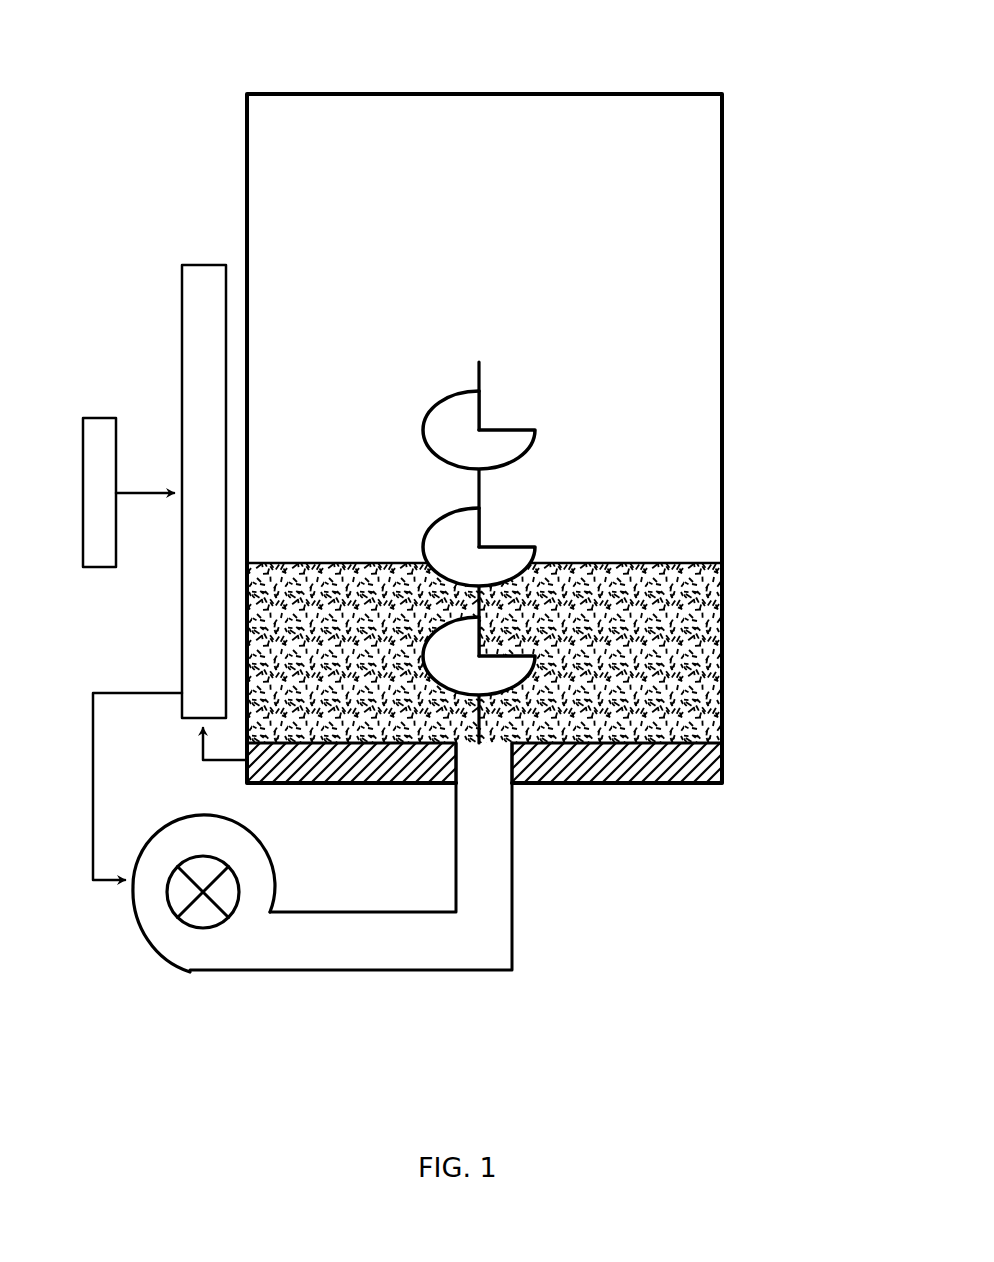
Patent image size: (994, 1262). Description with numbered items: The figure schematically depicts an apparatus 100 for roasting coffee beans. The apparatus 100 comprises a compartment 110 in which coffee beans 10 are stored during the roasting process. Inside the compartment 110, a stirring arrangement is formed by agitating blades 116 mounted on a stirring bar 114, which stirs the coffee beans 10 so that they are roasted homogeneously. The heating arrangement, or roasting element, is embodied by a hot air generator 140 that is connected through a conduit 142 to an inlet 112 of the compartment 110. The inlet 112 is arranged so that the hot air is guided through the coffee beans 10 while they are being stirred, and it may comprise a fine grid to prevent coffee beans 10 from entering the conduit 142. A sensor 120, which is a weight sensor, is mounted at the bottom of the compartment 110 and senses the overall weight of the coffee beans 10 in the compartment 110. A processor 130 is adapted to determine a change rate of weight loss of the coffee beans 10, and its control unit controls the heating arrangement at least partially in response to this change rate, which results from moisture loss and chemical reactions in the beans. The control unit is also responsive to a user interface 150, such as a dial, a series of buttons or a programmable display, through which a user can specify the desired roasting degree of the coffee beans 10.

The apparatus 100 is at (128, 82).
The compartment 110 is at (682, 492).
The coffee beans 10 is at (706, 650).
The sensor 120 is at (706, 764).
The inlet 112 is at (479, 747).
The stirring bar 114 is at (479, 374).
The agitating blades 116 is at (513, 450).
The processor 130 is at (196, 298).
The user interface 150 is at (100, 428).
The hot air generator 140 is at (195, 948).
The conduit 142 is at (358, 948).